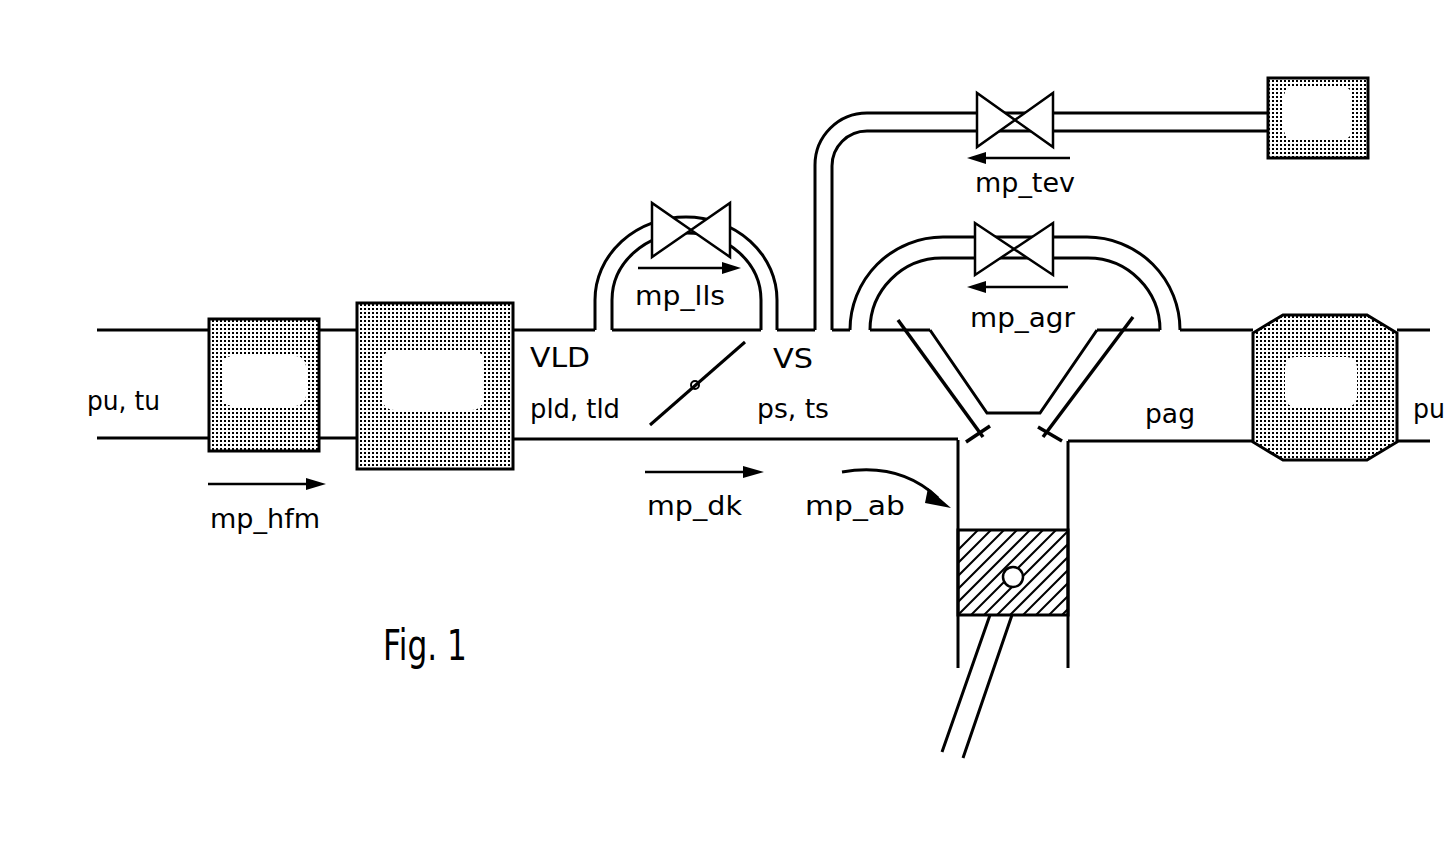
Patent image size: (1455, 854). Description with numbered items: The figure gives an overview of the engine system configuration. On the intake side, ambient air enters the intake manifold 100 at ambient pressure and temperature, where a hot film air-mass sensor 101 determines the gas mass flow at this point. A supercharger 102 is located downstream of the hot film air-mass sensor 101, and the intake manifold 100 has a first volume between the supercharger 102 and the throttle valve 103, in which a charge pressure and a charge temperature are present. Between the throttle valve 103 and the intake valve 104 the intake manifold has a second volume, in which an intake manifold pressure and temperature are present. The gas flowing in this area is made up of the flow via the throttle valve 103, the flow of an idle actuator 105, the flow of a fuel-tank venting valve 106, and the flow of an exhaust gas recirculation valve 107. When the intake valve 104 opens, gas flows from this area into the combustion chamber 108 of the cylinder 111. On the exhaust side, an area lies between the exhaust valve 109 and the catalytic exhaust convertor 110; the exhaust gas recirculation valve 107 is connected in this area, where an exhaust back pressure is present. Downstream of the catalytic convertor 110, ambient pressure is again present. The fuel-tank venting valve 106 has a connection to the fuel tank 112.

The intake manifold 100 is at (793, 445).
The hot film air-mass sensor 101 is at (280, 397).
The supercharger 102 is at (457, 397).
The throttle valve 103 is at (670, 413).
The intake valve 104 is at (926, 365).
The idle actuator 105 is at (667, 223).
The fuel-tank venting valve 106 is at (995, 110).
The exhaust gas recirculation valve 107 is at (978, 233).
The combustion chamber 108 is at (1043, 483).
The exhaust valve 109 is at (1112, 357).
The catalytic exhaust convertor 110 is at (1342, 399).
The cylinder 111 is at (1072, 642).
The fuel tank 112 is at (1337, 131).